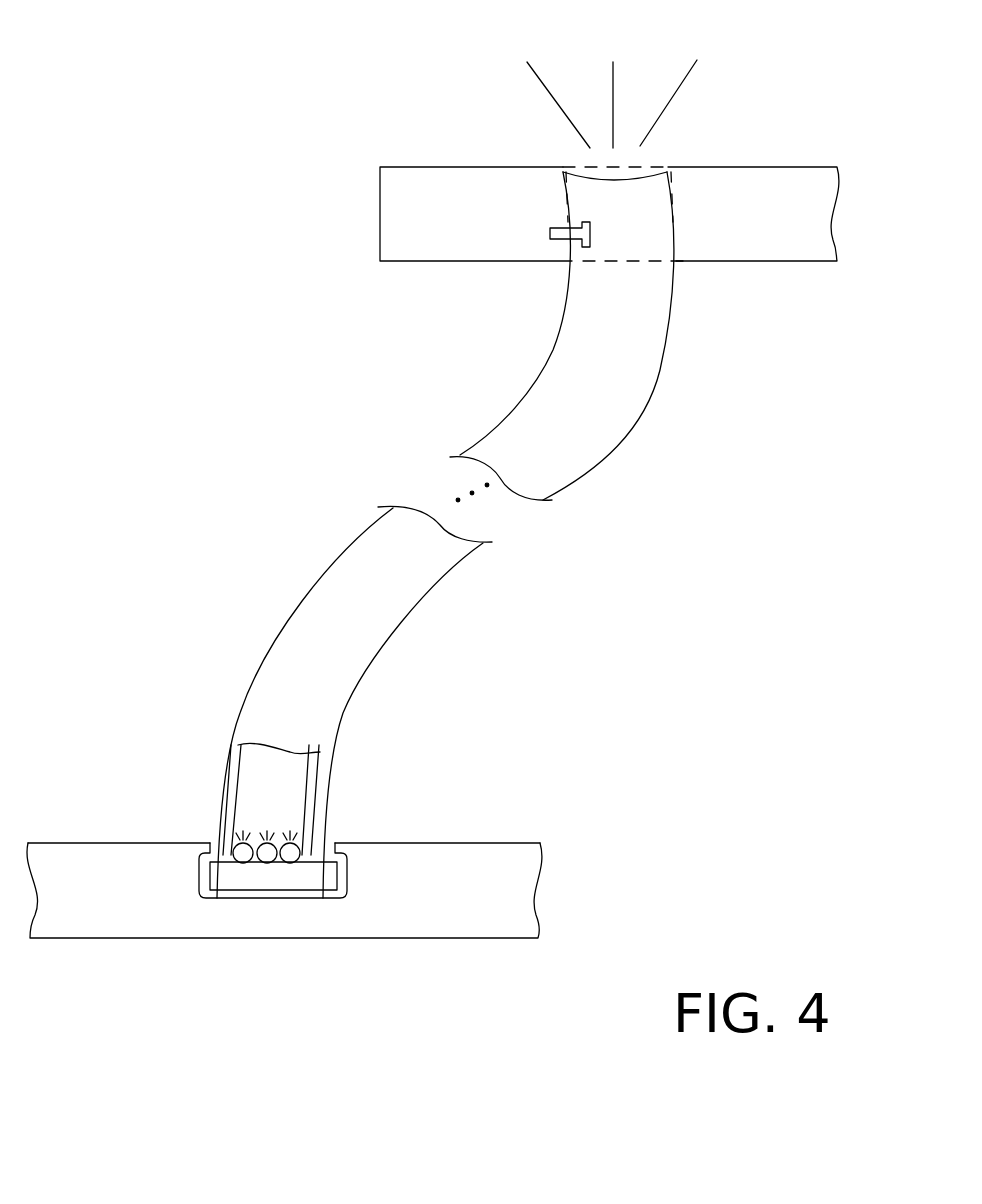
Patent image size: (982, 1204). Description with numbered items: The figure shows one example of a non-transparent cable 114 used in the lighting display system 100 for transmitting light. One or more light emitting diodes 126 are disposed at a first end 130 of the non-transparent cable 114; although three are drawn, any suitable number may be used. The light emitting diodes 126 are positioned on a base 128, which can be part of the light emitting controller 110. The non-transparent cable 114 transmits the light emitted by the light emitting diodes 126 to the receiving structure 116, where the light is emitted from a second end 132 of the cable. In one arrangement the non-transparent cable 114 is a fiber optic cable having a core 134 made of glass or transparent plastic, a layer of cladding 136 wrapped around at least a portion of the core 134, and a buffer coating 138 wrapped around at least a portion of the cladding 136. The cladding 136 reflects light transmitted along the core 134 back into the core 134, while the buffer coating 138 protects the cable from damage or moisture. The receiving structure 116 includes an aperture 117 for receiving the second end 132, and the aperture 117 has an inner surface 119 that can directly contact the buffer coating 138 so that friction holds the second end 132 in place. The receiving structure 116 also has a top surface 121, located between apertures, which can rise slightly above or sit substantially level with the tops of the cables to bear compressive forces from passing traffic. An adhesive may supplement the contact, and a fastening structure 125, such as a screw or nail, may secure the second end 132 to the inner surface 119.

The lighting display system 100 is at (235, 78).
The light emitting controller 110 is at (445, 962).
The non-transparent cable 114 is at (252, 555).
The receiving structure 116 is at (476, 150).
The aperture 117 is at (657, 148).
The inner surface 119 is at (678, 238).
The top surface 121 is at (777, 164).
The fastening structure 125 is at (556, 244).
The light emitting diode 126 is at (245, 858).
The base 128 is at (328, 878).
The first end 130 is at (205, 825).
The second end 132 is at (690, 211).
The core 134 is at (290, 802).
The cladding 136 is at (237, 766).
The buffer coating 138 is at (650, 330).